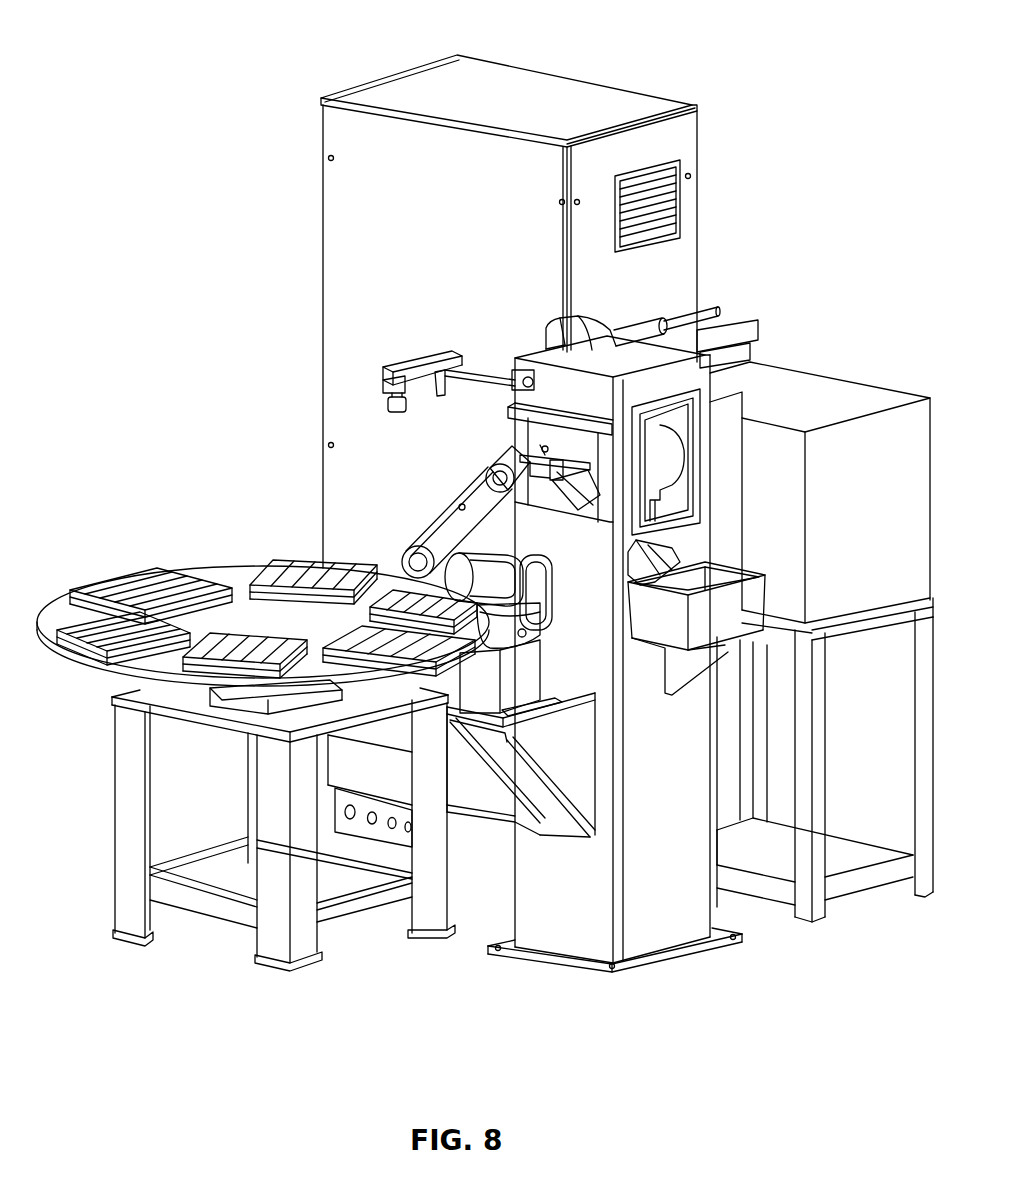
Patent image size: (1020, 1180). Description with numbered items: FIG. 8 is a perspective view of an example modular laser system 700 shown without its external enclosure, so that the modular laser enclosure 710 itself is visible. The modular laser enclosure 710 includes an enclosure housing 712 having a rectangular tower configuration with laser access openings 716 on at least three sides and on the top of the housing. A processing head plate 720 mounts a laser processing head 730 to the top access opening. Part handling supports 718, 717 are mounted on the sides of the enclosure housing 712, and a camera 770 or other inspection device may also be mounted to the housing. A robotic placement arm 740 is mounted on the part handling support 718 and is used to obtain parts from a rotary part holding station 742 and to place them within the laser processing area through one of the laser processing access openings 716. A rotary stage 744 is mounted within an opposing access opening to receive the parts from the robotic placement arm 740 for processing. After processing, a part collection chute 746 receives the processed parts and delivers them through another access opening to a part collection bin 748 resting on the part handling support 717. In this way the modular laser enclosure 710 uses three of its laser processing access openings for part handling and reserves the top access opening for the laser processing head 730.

The modular laser system 700 is at (200, 28).
The modular laser enclosure 710 is at (477, 448).
The enclosure housing 712 is at (570, 937).
The laser access openings 716 is at (555, 463).
The part handling support 717 is at (770, 643).
The part handling support 718 is at (565, 815).
The processing head plate 720 is at (682, 353).
The laser processing head 730 is at (556, 325).
The robotic placement arm 740 is at (405, 543).
The rotary part holding station 742 is at (52, 647).
The rotary stage 744 is at (667, 440).
The part collection chute 746 is at (623, 573).
The part collection bin 748 is at (727, 573).
The camera 770 is at (372, 377).